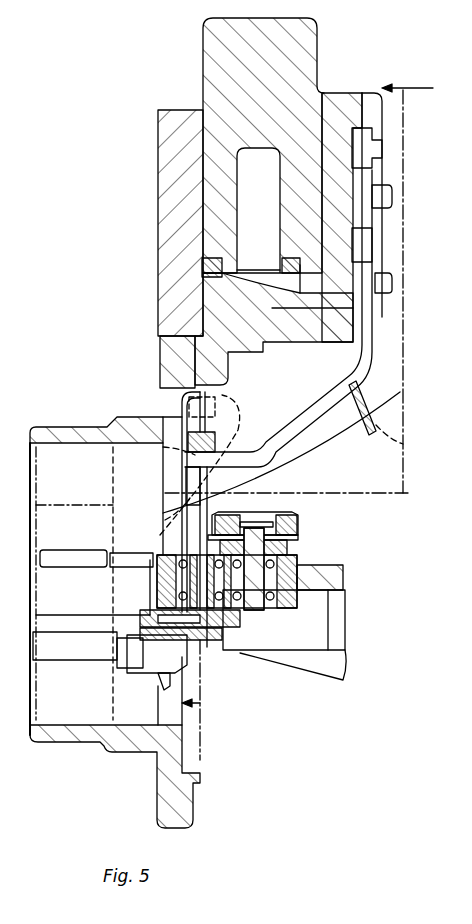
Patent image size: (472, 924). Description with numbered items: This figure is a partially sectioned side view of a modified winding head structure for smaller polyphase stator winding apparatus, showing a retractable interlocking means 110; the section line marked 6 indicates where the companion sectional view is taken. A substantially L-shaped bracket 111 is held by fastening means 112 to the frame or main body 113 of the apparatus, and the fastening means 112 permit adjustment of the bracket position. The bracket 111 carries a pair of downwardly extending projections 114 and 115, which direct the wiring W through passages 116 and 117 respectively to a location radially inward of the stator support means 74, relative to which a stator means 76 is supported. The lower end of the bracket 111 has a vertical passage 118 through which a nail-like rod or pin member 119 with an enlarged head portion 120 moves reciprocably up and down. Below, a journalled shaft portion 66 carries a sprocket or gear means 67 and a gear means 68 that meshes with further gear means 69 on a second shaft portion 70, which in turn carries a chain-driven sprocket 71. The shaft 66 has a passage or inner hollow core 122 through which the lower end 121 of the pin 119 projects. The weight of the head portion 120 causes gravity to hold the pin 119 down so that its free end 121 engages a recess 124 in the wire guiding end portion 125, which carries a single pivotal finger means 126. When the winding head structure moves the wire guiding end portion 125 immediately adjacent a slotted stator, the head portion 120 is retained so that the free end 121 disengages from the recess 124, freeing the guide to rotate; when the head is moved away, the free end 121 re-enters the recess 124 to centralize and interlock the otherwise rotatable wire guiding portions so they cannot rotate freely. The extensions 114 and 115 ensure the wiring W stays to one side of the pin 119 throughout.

The frame or main body 113 is at (337, 107).
The fastening means 112 is at (392, 203).
The L-shaped bracket 111 is at (363, 337).
The downwardly extending projection 114 is at (362, 394).
The passage 116 is at (402, 443).
The interlocking means 110 is at (340, 436).
The enlarged head portion 120 is at (218, 401).
The passage 118 is at (238, 440).
The rod or pin member 119 is at (190, 473).
The downwardly extending projection 115 is at (188, 488).
The passage 117 is at (180, 508).
The stator support means 74 is at (130, 424).
The stator means 76 is at (38, 496).
The sprocket 71 is at (232, 532).
The shaft portion 70 is at (253, 553).
The gear means 68 is at (187, 587).
The shaft portion 66 is at (193, 590).
The further gear means 69 is at (277, 578).
The sprocket or gear means 67 is at (237, 620).
The recess 124 is at (207, 642).
The lower end 121 is at (187, 641).
The passage or inner hollow core 122 is at (117, 633).
The wire guiding end portion 125 is at (137, 668).
The pivotal finger means 126 is at (160, 683).
The section line 6 is at (299, 413).
The wiring W is at (320, 452).